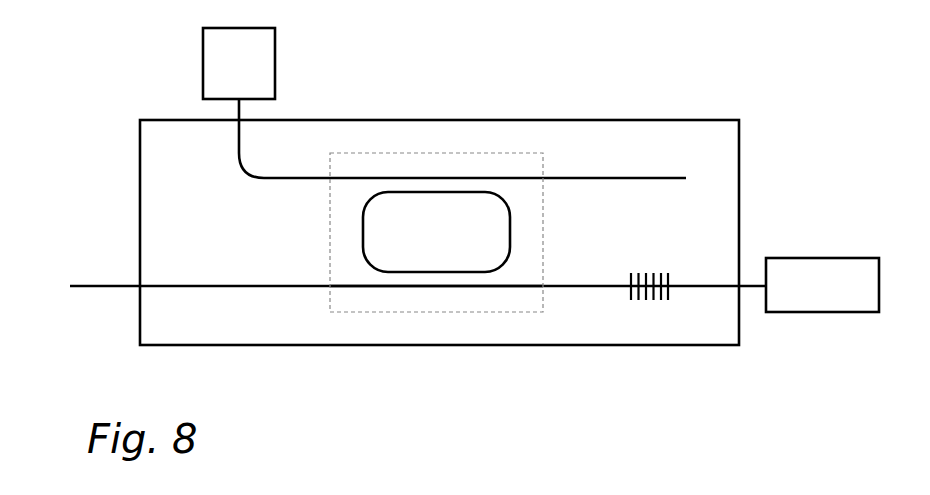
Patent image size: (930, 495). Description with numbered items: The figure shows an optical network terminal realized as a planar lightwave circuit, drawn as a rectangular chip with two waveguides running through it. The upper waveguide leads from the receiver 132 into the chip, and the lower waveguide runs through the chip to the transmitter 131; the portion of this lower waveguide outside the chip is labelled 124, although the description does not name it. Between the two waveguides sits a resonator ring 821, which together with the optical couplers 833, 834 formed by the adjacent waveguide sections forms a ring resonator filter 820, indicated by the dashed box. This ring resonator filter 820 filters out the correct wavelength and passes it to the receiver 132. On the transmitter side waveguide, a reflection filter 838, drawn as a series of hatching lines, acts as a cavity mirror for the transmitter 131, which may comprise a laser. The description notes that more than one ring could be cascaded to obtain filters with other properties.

The receiver 132 is at (239, 63).
The transmitter 131 is at (822, 285).
The conductor line 124 is at (97, 287).
The ring resonator filter 820 is at (399, 152).
The resonator ring 821 is at (402, 272).
The optical coupler 833 is at (461, 168).
The optical coupler 834 is at (467, 293).
The reflection filter 838 is at (640, 303).